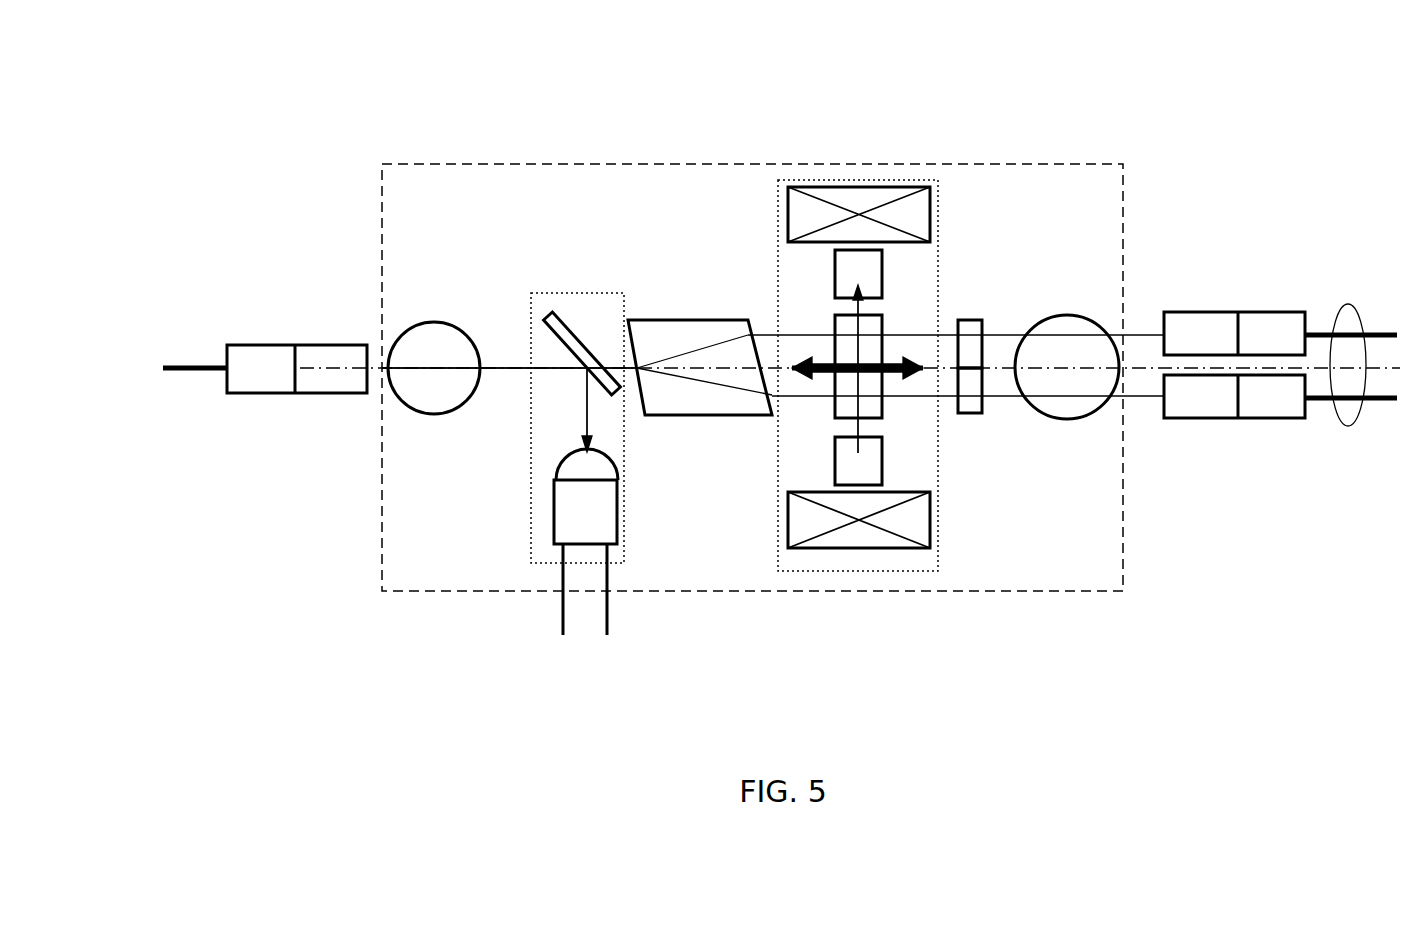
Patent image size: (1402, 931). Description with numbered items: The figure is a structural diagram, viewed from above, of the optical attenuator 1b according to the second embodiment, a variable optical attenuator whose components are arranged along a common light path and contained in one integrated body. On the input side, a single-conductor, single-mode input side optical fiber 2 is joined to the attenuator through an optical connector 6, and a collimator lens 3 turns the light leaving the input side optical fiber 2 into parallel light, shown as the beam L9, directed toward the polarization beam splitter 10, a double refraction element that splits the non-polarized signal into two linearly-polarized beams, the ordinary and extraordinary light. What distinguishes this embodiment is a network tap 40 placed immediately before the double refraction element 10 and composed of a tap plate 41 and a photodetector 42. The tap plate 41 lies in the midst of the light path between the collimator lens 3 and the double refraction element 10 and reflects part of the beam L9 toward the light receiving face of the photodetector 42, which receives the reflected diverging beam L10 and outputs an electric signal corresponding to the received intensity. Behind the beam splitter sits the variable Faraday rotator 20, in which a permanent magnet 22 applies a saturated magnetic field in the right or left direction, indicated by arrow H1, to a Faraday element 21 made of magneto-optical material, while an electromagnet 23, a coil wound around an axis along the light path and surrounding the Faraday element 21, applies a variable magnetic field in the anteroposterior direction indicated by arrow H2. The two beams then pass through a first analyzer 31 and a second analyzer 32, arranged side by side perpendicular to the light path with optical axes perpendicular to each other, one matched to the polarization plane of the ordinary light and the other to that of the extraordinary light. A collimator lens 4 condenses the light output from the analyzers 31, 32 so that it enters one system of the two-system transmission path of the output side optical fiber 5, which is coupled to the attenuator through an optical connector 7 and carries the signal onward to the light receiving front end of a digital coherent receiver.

The optical attenuator 1b is at (600, 160).
The input side optical fiber 2 is at (200, 366).
The collimator lens 3 is at (432, 322).
The collimator lens 4 is at (1090, 415).
The output side optical fiber 5 is at (1350, 425).
The optical connector 6 is at (315, 394).
The optical connector 7 is at (1262, 312).
The polarization beam splitter 10 is at (655, 330).
The variable Faraday rotator 20 is at (873, 571).
The Faraday element 21 is at (838, 408).
The permanent magnet 22 is at (880, 276).
The electromagnet 23 is at (890, 210).
The first analyzer 31 is at (975, 320).
The second analyzer 32 is at (975, 410).
The network tap 40 is at (531, 563).
The tap plate 41 is at (545, 316).
The photodetector 42 is at (554, 510).
The beam L9 is at (493, 366).
The diverging beam L10 is at (585, 410).
The saturated magnetic field direction H1 is at (850, 308).
The variable magnetic field direction H2 is at (900, 362).